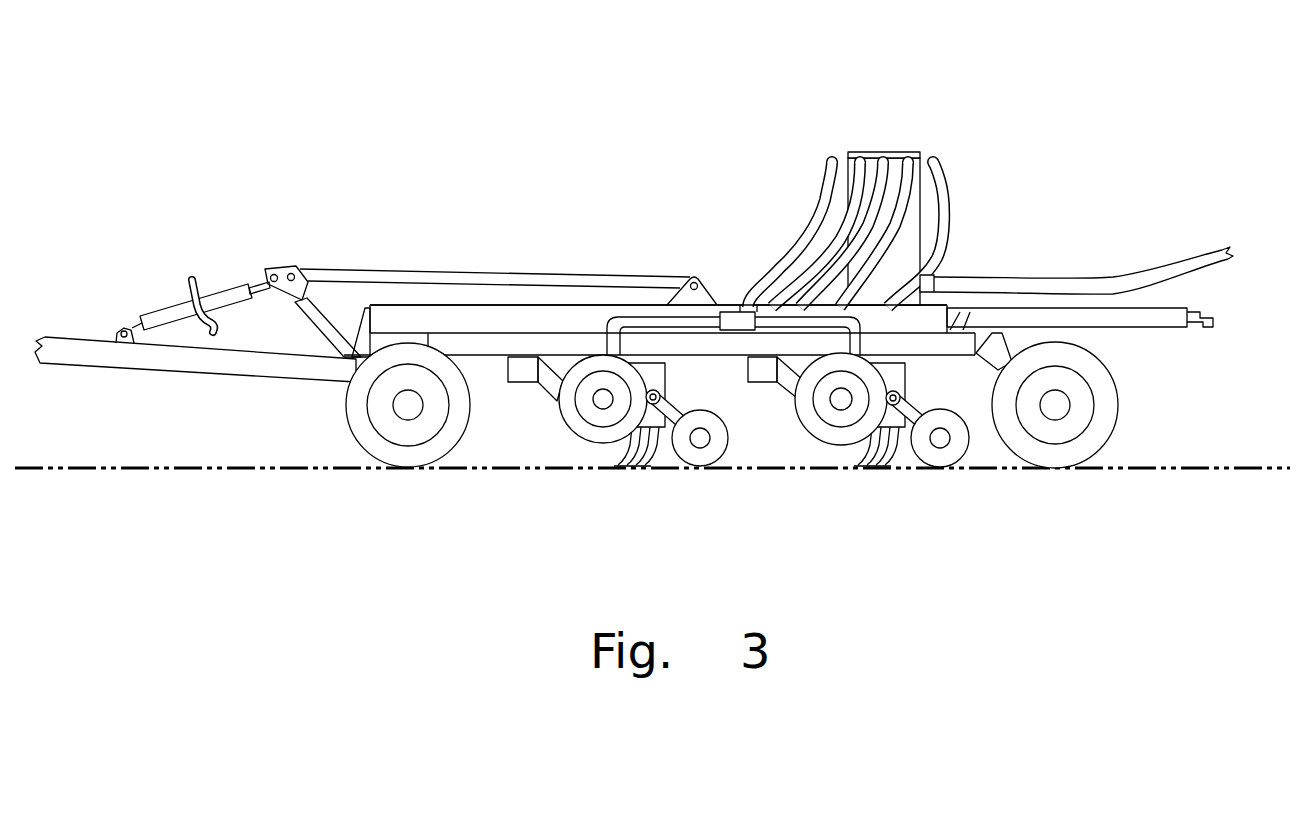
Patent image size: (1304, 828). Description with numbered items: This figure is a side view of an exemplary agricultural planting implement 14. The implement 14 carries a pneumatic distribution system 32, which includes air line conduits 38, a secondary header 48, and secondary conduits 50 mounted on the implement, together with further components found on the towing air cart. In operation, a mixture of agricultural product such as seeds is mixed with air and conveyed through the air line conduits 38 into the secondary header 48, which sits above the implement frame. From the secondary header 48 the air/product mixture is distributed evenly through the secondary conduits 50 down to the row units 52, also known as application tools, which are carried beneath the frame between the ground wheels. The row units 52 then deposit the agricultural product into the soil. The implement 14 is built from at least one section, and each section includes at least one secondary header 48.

The agricultural planting implement 14 is at (622, 178).
The pneumatic distribution system 32 is at (1005, 175).
The air line conduits 38 is at (1202, 258).
The secondary header 48 is at (893, 152).
The secondary conduits 50 is at (814, 204).
The row units 52 is at (665, 478).